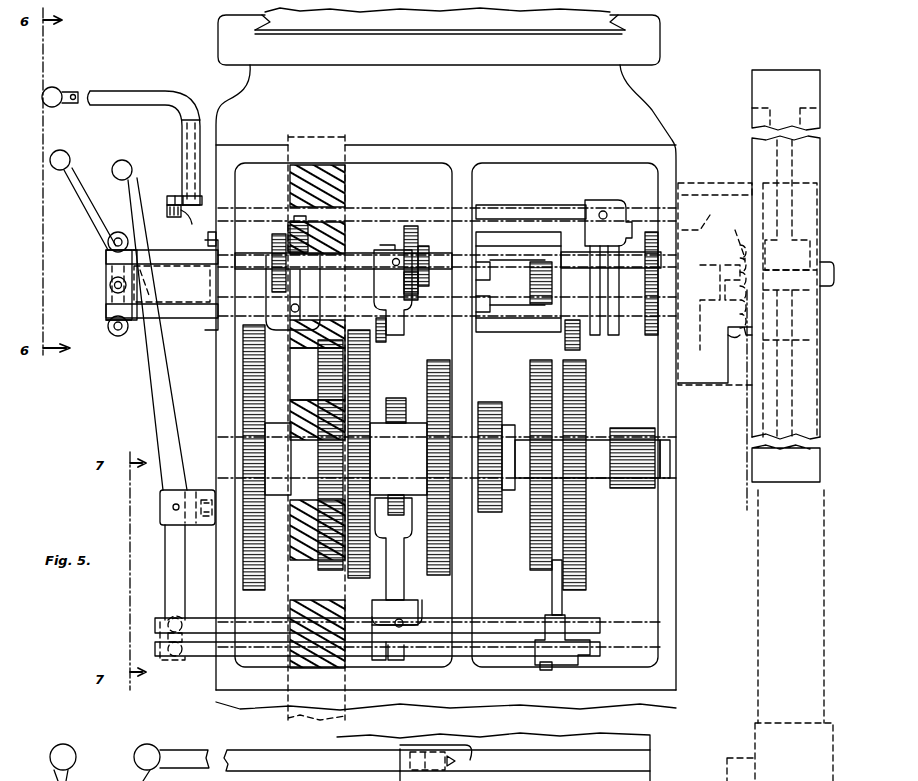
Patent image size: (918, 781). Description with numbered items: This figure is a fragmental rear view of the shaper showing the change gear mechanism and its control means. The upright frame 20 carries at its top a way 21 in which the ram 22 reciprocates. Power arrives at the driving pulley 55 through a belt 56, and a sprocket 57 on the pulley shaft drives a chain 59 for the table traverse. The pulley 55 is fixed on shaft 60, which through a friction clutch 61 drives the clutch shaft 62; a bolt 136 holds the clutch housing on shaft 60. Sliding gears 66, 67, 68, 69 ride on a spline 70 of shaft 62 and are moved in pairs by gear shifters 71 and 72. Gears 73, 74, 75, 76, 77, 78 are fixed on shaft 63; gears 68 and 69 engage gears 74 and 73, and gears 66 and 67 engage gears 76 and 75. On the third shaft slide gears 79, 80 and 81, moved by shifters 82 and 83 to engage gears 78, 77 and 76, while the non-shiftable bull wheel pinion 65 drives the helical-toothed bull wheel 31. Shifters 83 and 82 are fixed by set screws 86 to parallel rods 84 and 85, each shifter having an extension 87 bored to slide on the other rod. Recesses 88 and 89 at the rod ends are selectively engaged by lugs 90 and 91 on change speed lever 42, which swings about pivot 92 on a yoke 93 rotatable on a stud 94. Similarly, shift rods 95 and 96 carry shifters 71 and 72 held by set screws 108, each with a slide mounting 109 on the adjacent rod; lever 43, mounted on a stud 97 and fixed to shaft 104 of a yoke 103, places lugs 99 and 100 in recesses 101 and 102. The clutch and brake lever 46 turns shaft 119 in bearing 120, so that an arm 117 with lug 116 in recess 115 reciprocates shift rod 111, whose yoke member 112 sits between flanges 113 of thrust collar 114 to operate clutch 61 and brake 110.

The upright frame 20 is at (640, 110).
The way 21 is at (612, 23).
The ram 22 is at (262, 22).
The bull wheel 31 is at (290, 660).
The change speed lever 42 is at (130, 183).
The change speed lever 43 is at (70, 170).
The clutch and brake lever 46 is at (70, 92).
The driving pulley 55 is at (752, 100).
The belt 56 is at (758, 700).
The sprocket 57 is at (737, 266).
The chain 59 is at (745, 495).
The shaft 60 is at (728, 265).
The friction clutch 61 is at (701, 214).
The clutch shaft 62 is at (680, 265).
The shaft 63 is at (680, 460).
The bull wheel pinion 65 is at (290, 510).
The sliding gear 66 is at (412, 228).
The sliding gear 67 is at (382, 248).
The sliding gear 68 is at (296, 218).
The sliding gear 69 is at (290, 232).
The spline 70 is at (424, 250).
The gear shifter 71 is at (420, 283).
The gear shifter 72 is at (310, 286).
The gear 73 is at (258, 406).
The gear 74 is at (340, 350).
The gear 75 is at (365, 372).
The gear 76 is at (427, 395).
The gear 77 is at (490, 402).
The gear 78 is at (625, 428).
The sliding gear 79 is at (586, 556).
The sliding gear 80 is at (530, 545).
The slidable gear 81 is at (402, 518).
The gear shifter 82 is at (553, 585).
The gear shifter 83 is at (400, 605).
The shift rod 84 is at (208, 634).
The shift rod 85 is at (211, 658).
The set screw 86 is at (403, 623).
The extension 87 is at (396, 662).
The recess 88 is at (170, 618).
The recess 89 is at (168, 662).
The lug 90 is at (186, 610).
The lug 91 is at (176, 658).
The pivot 92 is at (173, 510).
The yoke 93 is at (165, 525).
The stud 94 is at (208, 518).
The shift rod 95 is at (158, 262).
The shift rod 96 is at (183, 318).
The stud 97 is at (160, 292).
The lug 99 is at (110, 246).
The lug 100 is at (112, 334).
The recess 101 is at (108, 268).
The recess 102 is at (108, 318).
The yoke 103 is at (112, 300).
The shaft 104 is at (110, 288).
The set screw 108 is at (395, 255).
The slide mounting 109 is at (272, 258).
The brake 110 is at (514, 230).
The shift rod 111 is at (548, 204).
The yoke member 112 is at (614, 245).
The flanges 113 is at (595, 335).
The thrust collar 114 is at (625, 330).
The recess 115 is at (165, 211).
The lug 116 is at (194, 228).
The arm 117 is at (178, 196).
The shaft 119 is at (187, 147).
The bearing 120 is at (181, 132).
The bolt 136 is at (715, 346).